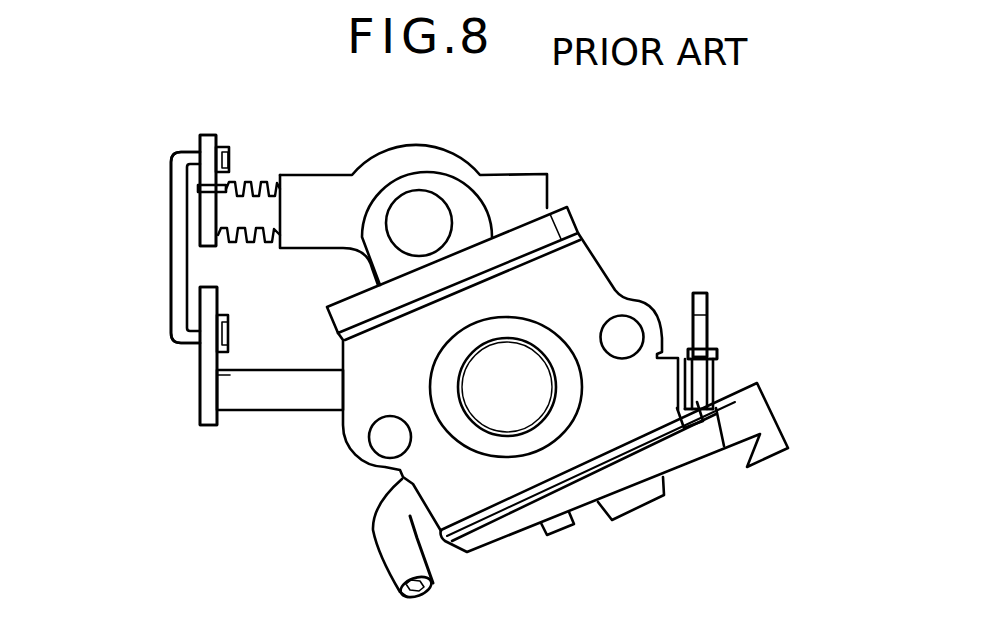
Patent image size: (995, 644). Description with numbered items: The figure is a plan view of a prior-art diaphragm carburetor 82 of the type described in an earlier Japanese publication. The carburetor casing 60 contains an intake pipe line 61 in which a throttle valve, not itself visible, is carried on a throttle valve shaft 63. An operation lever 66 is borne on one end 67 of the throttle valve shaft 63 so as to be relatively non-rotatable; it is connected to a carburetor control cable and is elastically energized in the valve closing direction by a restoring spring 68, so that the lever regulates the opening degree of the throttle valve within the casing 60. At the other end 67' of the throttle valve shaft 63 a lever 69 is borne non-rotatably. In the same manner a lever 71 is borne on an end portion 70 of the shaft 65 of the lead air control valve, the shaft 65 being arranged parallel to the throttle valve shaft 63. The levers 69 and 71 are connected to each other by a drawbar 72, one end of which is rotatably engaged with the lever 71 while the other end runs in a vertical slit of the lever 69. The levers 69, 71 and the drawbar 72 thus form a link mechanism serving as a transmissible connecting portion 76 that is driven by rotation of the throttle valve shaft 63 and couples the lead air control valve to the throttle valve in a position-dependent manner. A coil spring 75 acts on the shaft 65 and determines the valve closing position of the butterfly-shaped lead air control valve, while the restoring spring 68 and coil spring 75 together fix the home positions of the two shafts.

The carburetor casing 60 is at (392, 478).
The intake pipe line 61 is at (513, 355).
The throttle valve shaft 63 is at (304, 376).
The shaft 65 is at (250, 216).
The operation lever 66 is at (708, 330).
The one end of throttle valve shaft 67 is at (750, 372).
The other end of throttle valve shaft 67' is at (254, 426).
The restoring spring 68 is at (678, 357).
The lever 69 is at (203, 368).
The end portion 70 is at (217, 207).
The lever 71 is at (212, 143).
The drawbar 72 is at (175, 263).
The coil spring 75 is at (253, 190).
The transmissible connecting portion 76 is at (150, 223).
The diaphragm carburetor 82 is at (655, 289).